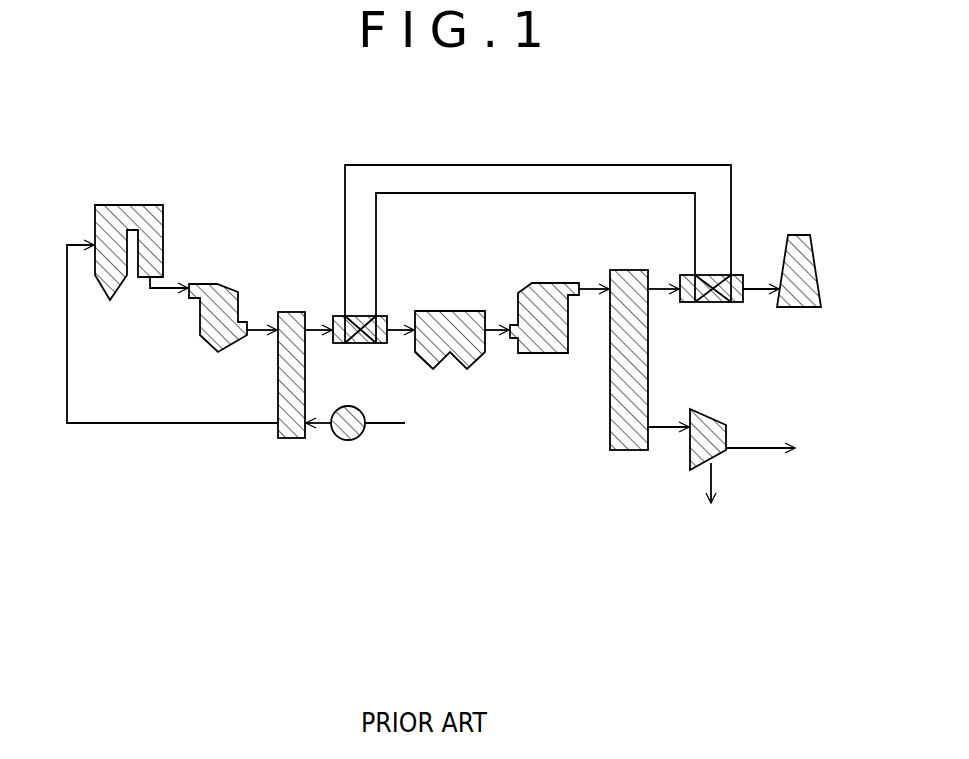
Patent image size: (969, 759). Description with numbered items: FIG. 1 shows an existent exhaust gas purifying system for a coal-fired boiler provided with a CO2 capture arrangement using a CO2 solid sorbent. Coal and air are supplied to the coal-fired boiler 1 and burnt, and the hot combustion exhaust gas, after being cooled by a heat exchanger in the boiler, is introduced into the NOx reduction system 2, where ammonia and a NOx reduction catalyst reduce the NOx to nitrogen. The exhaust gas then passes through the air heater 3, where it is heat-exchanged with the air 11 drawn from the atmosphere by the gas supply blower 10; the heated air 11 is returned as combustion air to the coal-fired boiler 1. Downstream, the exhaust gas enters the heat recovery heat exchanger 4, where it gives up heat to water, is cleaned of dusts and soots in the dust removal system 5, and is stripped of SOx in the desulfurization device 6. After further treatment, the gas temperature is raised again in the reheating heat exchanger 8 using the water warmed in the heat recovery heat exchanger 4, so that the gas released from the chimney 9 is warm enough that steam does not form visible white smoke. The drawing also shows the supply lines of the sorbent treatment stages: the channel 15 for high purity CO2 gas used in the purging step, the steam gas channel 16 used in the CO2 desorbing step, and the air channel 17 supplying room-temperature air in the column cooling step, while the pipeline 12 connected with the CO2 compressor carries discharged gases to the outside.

The coal-fired boiler 1 is at (130, 205).
The NOx reduction system 2 is at (215, 284).
The air heater 3 is at (290, 312).
The heat recovery heat exchanger (heat recovery GGH) 4 is at (360, 345).
The dust removal system 5 is at (450, 311).
The desulfurization device 6 is at (550, 283).
The reheating heat exchanger (reheating GGH) 8 is at (713, 304).
The chimney 9 is at (798, 235).
The gas supply blower 10 is at (348, 441).
The air 11 is at (385, 428).
The pipeline connected with the CO2 compressor 12 is at (712, 410).
The channel for high purity CO2 gas 15 is at (609, 395).
The steam gas channel 16 is at (609, 418).
The air channel 17 is at (609, 441).